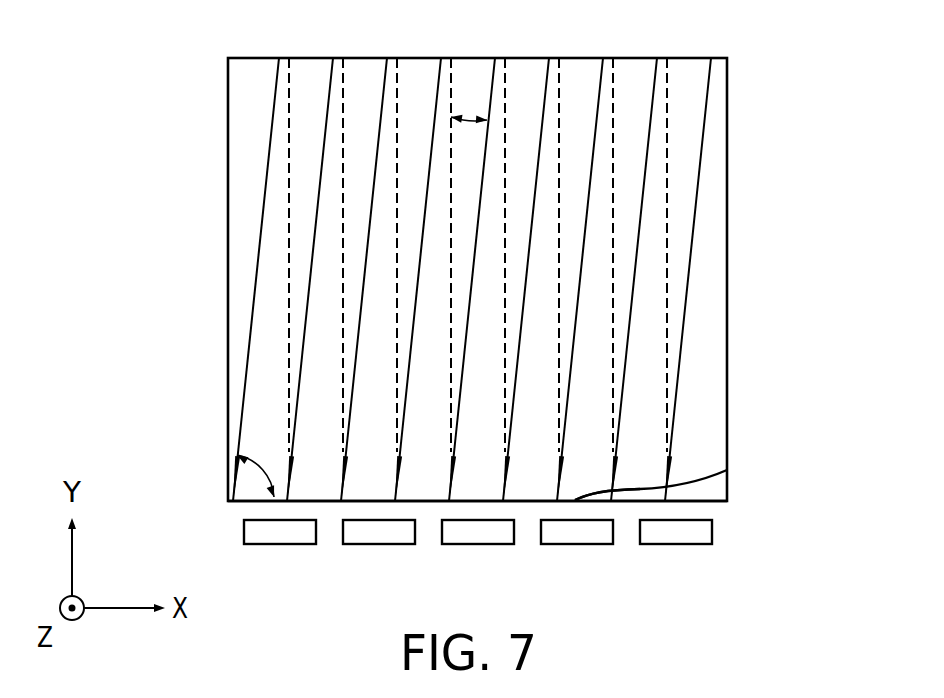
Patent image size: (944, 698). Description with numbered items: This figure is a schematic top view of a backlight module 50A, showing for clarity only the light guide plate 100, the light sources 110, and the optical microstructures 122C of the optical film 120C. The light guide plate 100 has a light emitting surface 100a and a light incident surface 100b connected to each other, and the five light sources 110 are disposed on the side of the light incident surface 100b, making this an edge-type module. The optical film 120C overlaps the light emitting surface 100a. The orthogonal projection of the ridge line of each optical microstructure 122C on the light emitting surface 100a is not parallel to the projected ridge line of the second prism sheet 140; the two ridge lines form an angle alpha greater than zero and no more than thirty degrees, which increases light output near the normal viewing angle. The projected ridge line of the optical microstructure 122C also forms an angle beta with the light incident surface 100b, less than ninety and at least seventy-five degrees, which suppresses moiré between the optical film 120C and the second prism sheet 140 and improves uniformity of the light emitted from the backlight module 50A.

The backlight module 50A is at (862, 617).
The light guide plate 100 is at (727, 486).
The light emitting surface 100a is at (704, 487).
The light incident surface 100b is at (711, 503).
The light source 110 is at (553, 544).
The optical film 120C is at (643, 490).
The optical microstructure 122C is at (544, 106).
The second prism sheet 140 is at (397, 100).